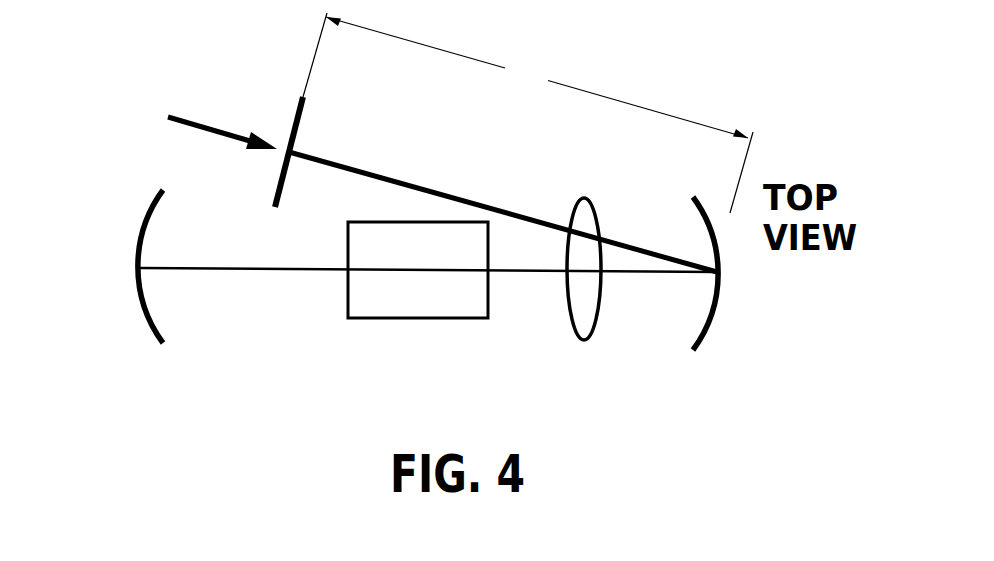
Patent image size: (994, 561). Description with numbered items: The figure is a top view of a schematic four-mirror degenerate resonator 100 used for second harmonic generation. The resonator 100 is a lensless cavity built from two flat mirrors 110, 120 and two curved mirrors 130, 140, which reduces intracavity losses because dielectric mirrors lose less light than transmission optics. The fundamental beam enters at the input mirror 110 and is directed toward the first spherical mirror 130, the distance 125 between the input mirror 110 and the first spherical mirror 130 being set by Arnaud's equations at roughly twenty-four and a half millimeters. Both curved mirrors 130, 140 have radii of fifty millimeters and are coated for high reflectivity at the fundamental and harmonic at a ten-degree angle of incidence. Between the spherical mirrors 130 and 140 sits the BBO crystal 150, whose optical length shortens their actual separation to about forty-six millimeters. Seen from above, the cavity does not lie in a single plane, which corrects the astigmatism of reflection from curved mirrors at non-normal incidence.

The degenerate resonator 100 is at (112, 338).
The input mirror 110 is at (305, 107).
The flat mirror 120 is at (582, 338).
The distance between input mirror and first spherical mirror 125 is at (528, 113).
The first spherical mirror 130 is at (697, 333).
The second spherical mirror 140 is at (158, 325).
The BBO crystal 150 is at (432, 322).